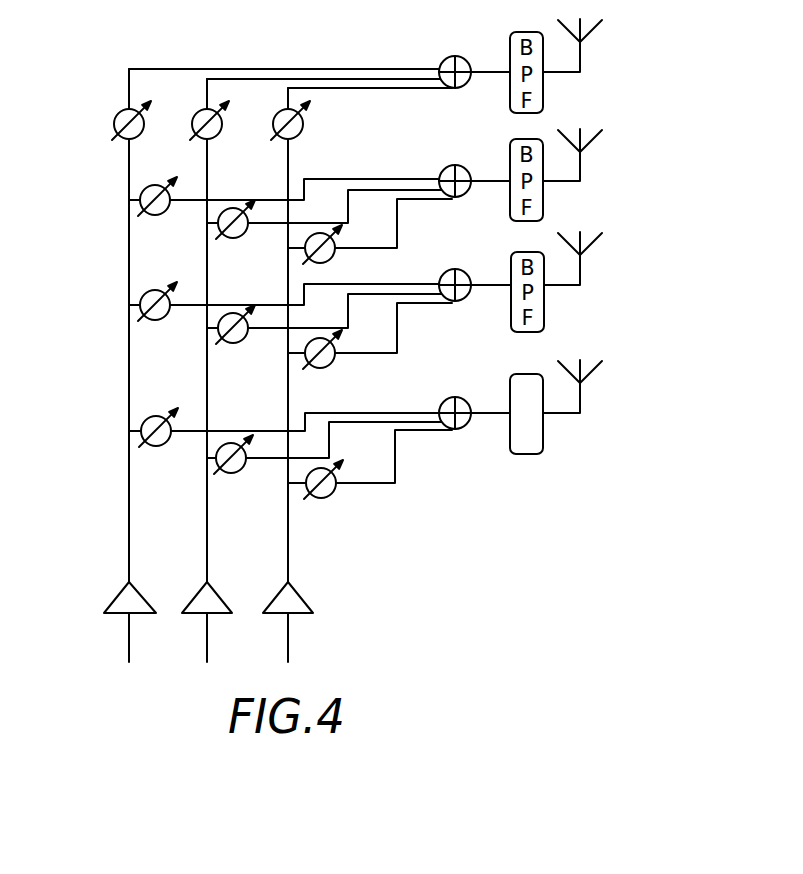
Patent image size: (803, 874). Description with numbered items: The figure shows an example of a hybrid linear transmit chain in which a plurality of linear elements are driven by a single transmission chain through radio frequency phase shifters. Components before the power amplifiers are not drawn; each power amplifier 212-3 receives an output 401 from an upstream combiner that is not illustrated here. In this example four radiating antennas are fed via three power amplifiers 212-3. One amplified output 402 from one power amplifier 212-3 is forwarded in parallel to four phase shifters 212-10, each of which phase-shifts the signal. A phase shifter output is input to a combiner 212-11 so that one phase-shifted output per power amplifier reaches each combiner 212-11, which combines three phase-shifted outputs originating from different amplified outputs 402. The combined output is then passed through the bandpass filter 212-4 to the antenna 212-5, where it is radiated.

The output from the combiner 401 is at (127, 640).
The amplified output 402 is at (128, 488).
The power amplifier 212-3 is at (116, 594).
The phase shifter 212-10 is at (146, 418).
The combiner 212-11 is at (465, 430).
The bandpass filter 212-4 is at (512, 376).
The antenna 212-5 is at (588, 378).